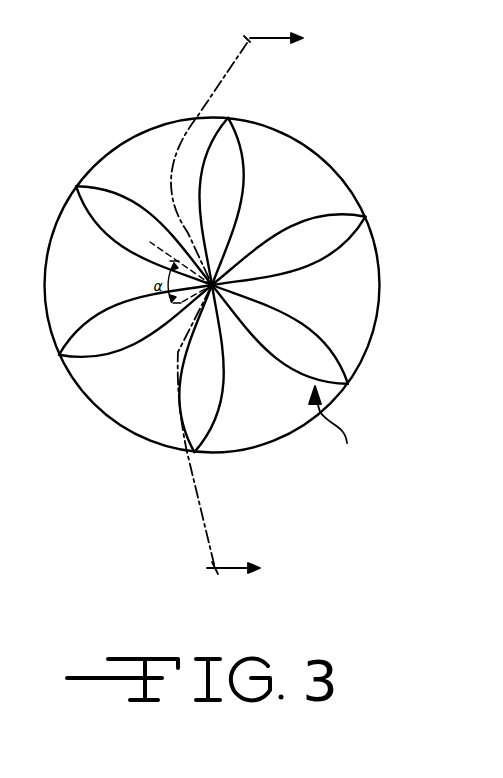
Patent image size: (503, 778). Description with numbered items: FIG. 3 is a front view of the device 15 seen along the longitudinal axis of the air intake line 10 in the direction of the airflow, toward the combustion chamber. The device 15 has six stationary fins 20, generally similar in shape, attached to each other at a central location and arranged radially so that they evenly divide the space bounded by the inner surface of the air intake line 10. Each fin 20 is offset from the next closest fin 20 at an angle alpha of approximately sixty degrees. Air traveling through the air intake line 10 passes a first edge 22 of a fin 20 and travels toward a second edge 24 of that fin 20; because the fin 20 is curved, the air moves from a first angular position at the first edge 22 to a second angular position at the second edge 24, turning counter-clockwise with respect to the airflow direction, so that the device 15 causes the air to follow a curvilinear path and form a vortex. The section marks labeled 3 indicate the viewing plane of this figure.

The air intake line 10 is at (143, 130).
The device 15 is at (335, 428).
The stationary fin 20 is at (217, 277).
The first edge 22 is at (155, 212).
The second edge 24 is at (200, 197).
The section line 3- 3 is at (249, 306).